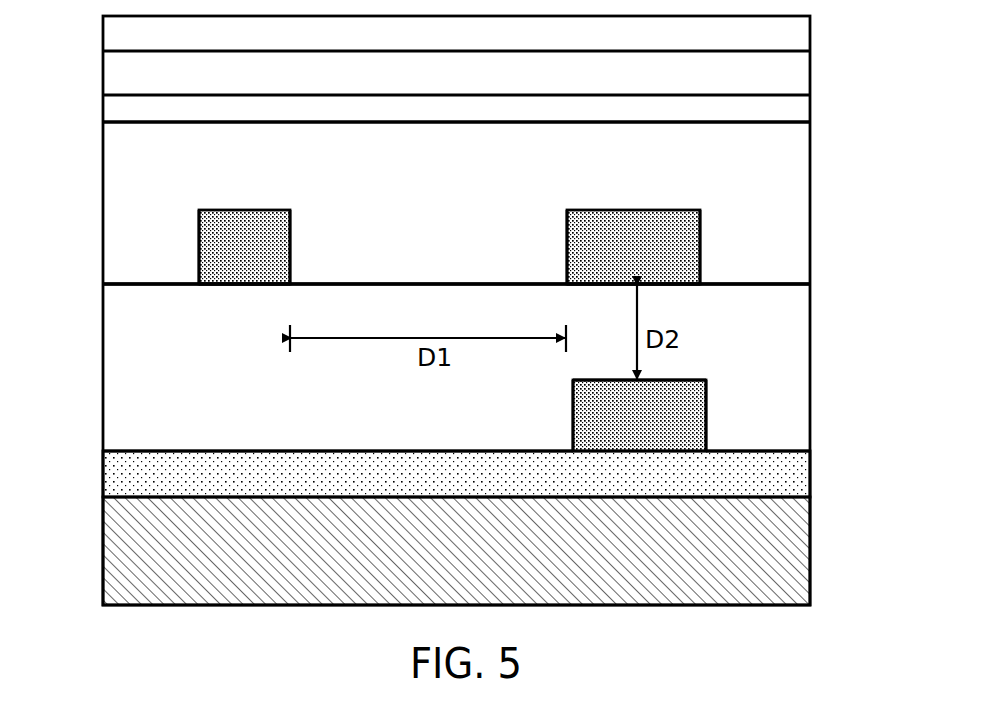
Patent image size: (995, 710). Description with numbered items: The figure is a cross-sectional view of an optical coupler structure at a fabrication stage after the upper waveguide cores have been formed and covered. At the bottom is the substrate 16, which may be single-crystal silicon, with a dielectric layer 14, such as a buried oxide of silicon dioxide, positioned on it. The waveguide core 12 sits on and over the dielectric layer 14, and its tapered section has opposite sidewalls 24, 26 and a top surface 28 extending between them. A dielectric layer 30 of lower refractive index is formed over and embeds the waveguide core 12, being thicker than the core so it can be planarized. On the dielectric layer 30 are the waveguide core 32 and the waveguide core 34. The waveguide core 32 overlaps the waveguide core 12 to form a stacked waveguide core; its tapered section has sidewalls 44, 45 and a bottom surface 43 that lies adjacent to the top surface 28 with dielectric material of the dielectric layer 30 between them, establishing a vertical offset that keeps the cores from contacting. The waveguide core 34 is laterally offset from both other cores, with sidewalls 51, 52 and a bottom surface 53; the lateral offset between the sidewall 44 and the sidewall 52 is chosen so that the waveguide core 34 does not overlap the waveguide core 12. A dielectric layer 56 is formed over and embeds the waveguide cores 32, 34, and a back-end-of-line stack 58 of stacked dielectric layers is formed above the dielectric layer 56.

The waveguide core 12 is at (667, 402).
The dielectric layer 14 is at (763, 474).
The substrate 16 is at (137, 550).
The sidewall 24 is at (573, 417).
The sidewall 26 is at (707, 432).
The top surface 28 is at (600, 380).
The dielectric layer 30 is at (757, 355).
The waveguide core 32 is at (665, 242).
The waveguide core 34 is at (225, 242).
The bottom surface 43 is at (587, 285).
The sidewall 44 is at (567, 250).
The sidewall 45 is at (700, 268).
The sidewall 51 is at (199, 268).
The sidewall 52 is at (291, 248).
The bottom surface 53 is at (248, 285).
The dielectric layer 56 is at (763, 172).
The back-end-of-line stack 58 is at (835, 17).